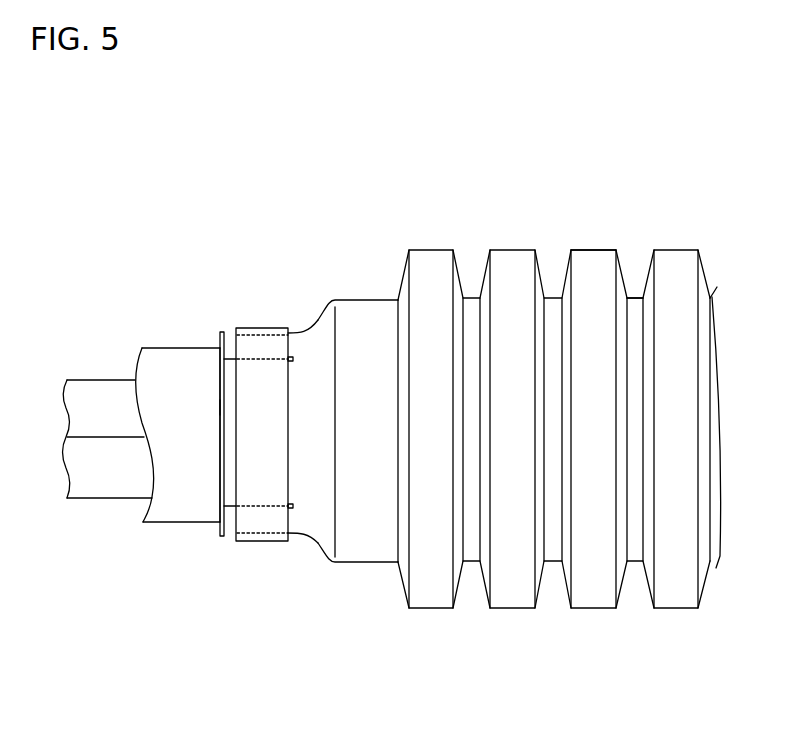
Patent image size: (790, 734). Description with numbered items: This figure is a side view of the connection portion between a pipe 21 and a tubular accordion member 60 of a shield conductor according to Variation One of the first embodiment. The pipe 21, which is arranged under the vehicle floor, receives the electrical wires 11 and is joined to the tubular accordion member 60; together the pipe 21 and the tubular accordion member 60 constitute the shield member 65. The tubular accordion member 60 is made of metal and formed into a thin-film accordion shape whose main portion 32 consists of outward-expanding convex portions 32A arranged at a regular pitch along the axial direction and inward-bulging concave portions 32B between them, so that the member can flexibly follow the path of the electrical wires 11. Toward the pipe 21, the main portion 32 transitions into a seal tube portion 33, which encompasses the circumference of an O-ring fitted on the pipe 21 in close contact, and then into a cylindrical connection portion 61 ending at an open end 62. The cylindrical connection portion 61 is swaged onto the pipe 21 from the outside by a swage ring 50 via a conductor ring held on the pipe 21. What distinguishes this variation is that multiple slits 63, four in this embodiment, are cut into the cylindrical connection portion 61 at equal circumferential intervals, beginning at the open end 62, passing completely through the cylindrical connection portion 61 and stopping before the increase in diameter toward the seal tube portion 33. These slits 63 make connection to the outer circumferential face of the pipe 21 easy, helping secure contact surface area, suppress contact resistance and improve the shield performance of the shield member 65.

The electrical wire 11 is at (87, 387).
The pipe 21 is at (183, 510).
The main portion 32 is at (559, 382).
The convex portion 32A is at (595, 250).
The concave portion 32B is at (635, 297).
The seal tube portion 33 is at (373, 298).
The swage ring 50 is at (258, 490).
The tubular accordion member 60 is at (489, 428).
The cylindrical connection portion 61 is at (265, 332).
The open end 62 is at (220, 408).
The slit 63 is at (221, 364).
The shield member 65 is at (428, 445).